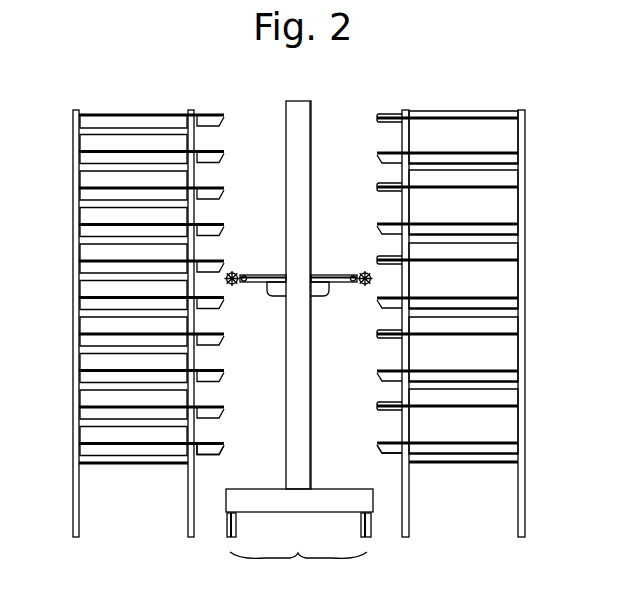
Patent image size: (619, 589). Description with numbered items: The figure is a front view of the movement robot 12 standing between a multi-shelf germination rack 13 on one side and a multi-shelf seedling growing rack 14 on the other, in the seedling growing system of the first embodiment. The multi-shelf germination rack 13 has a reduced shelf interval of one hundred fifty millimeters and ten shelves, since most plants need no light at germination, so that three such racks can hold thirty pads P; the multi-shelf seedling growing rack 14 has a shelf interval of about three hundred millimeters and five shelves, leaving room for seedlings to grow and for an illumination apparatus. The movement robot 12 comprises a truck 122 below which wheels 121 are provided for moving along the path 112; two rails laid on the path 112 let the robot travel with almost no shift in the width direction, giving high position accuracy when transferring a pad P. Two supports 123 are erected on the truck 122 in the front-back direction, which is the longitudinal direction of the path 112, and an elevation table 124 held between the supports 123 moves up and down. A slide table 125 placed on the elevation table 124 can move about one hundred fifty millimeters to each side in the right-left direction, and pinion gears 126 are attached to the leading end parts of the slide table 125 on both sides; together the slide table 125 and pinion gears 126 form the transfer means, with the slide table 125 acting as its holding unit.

The movement robot 12 is at (337, 111).
The multi-shelf germination rack 13 is at (57, 107).
The multi-shelf seedling growing rack 14 is at (545, 111).
The path 112 is at (298, 566).
The wheels 121 is at (227, 530).
The truck 122 is at (307, 500).
The supports 123 is at (308, 180).
The elevation table 124 is at (281, 284).
The slide table 125 is at (317, 268).
The pinion gears 126 is at (363, 288).
The pad P is at (223, 443).